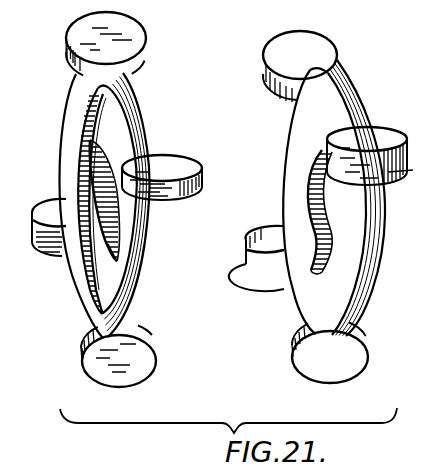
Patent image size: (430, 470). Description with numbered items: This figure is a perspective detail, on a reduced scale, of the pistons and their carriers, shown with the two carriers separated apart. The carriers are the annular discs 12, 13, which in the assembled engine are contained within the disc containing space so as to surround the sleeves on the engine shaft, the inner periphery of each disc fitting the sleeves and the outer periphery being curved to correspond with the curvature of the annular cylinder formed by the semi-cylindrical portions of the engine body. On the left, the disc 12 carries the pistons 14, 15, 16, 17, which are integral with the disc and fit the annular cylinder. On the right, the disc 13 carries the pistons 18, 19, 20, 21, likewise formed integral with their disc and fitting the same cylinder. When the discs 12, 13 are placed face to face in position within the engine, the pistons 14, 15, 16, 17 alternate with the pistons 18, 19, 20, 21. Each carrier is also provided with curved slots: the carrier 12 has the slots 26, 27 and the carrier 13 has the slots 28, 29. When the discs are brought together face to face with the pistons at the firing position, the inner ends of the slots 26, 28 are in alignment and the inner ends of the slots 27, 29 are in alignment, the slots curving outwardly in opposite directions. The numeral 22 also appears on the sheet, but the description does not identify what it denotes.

The annular disc 12 is at (93, 318).
The annular disc 13 is at (369, 283).
The piston 14 is at (128, 43).
The piston 15 is at (46, 250).
The piston 16 is at (118, 378).
The piston 17 is at (174, 202).
The piston 18 is at (325, 44).
The piston 19 is at (268, 276).
The piston 20 is at (356, 358).
The piston 21 is at (429, 12).
The drum 22 is at (409, 107).
The curved slot 26 is at (113, 150).
The curved slot 27 is at (119, 250).
The curved slot 28 is at (319, 162).
The curved slot 29 is at (330, 259).